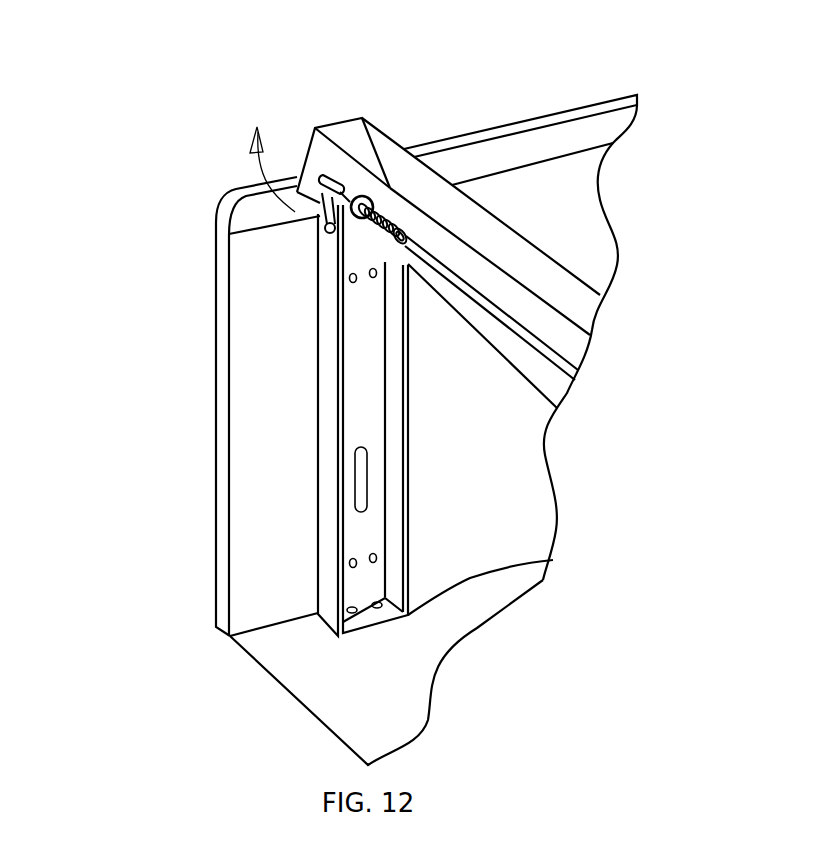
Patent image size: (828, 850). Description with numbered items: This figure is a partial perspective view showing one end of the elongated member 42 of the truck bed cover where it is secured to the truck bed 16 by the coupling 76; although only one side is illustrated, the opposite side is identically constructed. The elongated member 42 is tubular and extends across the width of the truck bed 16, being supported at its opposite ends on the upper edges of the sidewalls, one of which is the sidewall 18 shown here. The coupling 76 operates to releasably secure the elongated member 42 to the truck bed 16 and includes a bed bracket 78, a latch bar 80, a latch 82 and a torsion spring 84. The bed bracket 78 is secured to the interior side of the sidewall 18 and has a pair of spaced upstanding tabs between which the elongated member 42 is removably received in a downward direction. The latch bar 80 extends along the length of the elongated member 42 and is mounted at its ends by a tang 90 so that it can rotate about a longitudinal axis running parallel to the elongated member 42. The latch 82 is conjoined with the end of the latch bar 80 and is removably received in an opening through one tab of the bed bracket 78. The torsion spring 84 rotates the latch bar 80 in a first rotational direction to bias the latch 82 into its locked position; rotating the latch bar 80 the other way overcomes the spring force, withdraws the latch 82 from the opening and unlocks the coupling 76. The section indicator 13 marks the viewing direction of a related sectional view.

The section view indicator 13 is at (188, 222).
The truck bed 16 is at (230, 508).
The sidewall 18 is at (240, 363).
The elongated member 42 is at (558, 272).
The coupling 76 is at (273, 285).
The bed bracket 78 is at (408, 467).
The latch bar 80 is at (527, 332).
The latch 82 is at (331, 247).
The torsion spring 84 is at (392, 225).
The tang 90 is at (372, 212).